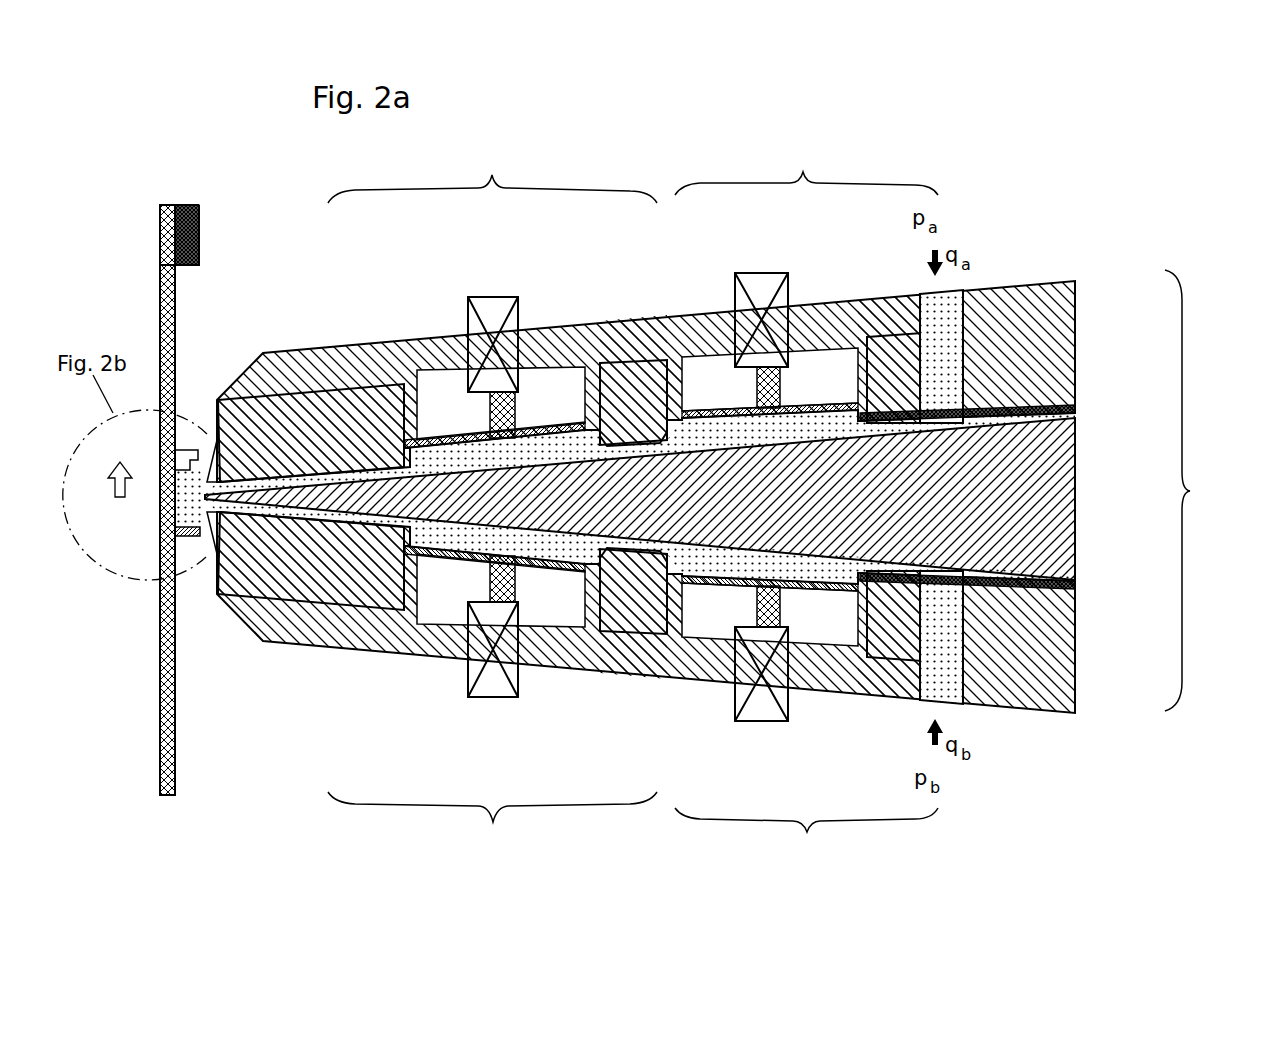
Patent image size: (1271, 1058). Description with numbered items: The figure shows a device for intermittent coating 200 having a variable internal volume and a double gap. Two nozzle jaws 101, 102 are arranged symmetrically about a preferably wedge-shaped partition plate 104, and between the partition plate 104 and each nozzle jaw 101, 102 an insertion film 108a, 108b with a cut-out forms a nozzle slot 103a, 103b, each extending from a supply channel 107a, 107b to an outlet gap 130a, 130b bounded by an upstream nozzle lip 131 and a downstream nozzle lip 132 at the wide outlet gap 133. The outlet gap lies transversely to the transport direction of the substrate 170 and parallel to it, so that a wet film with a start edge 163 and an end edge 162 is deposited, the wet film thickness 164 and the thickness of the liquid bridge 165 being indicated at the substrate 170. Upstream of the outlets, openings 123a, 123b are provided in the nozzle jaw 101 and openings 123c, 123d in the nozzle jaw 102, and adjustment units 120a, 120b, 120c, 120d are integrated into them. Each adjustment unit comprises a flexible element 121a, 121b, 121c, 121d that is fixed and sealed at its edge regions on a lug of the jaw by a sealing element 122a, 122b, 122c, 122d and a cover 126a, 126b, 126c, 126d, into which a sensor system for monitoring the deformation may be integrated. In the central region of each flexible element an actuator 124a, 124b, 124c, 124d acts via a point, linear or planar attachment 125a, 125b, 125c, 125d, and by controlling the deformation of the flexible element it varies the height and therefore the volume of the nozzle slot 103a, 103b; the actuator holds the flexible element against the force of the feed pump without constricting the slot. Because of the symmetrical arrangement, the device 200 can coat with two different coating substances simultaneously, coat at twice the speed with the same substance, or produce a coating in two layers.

The nozzle jaw 101 is at (1077, 282).
The nozzle jaw 102 is at (1073, 657).
The nozzle slot 103a is at (850, 438).
The nozzle slot 103b is at (798, 570).
The partition plate 104 is at (1085, 482).
The supply channel 107a is at (947, 302).
The supply channel 107b is at (963, 700).
The insertion film 108a is at (1078, 408).
The insertion film 108b is at (1075, 587).
The adjustment unit 120a is at (492, 175).
The adjustment unit 120b is at (806, 171).
The adjustment unit 120c is at (492, 825).
The adjustment unit 120d is at (806, 841).
The flexible element 121a is at (455, 457).
The flexible element 121b is at (748, 437).
The flexible element 121c is at (455, 537).
The flexible element 121d is at (748, 565).
The sealing element 122a is at (567, 433).
The sealing element 122b is at (837, 403).
The sealing element 122c is at (552, 552).
The sealing element 122d is at (838, 600).
The opening 123a is at (445, 432).
The opening 123b is at (723, 412).
The opening 123c is at (445, 562).
The opening 123d is at (723, 590).
The actuator 124a is at (488, 297).
The actuator 124b is at (752, 273).
The actuator 124c is at (492, 697).
The actuator 124d is at (752, 722).
The planar attachment 125a is at (518, 402).
The planar attachment 125b is at (782, 387).
The planar attachment 125c is at (518, 590).
The planar attachment 125d is at (783, 610).
The cover 126a is at (610, 335).
The cover 126b is at (875, 315).
The cover 126c is at (593, 648).
The cover 126d is at (868, 680).
The outlet gap 130a is at (212, 455).
The outlet gap 130b is at (212, 540).
The upstream nozzle lip 131 is at (160, 448).
The downstream nozzle lip 132 is at (160, 543).
The wide outlet gap 133 is at (160, 510).
The film end edge 162 is at (198, 265).
The film start edge 163 is at (190, 210).
The wet film thickness 164 is at (160, 223).
The thickness of liquid bridge 165 is at (175, 258).
The substrate 170 is at (175, 711).
The device for intermittent coating 200 is at (1202, 490).